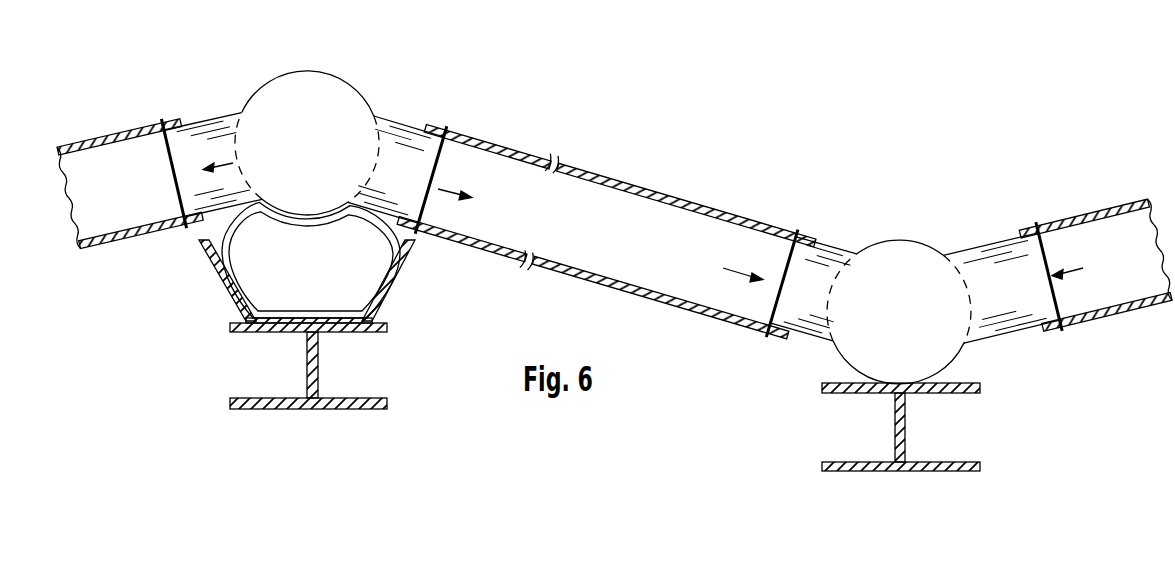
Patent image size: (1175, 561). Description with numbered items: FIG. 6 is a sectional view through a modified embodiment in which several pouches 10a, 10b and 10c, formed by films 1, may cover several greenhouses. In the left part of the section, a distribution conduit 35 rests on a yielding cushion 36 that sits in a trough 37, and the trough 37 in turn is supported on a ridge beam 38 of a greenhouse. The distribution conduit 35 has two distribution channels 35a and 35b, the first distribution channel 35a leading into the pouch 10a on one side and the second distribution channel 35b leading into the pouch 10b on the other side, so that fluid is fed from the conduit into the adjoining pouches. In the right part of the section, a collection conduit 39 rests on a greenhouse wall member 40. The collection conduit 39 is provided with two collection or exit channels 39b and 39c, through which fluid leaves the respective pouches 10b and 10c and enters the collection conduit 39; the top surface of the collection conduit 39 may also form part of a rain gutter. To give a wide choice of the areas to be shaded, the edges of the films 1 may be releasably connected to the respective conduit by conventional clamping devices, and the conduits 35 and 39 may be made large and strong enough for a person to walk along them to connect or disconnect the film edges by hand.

The film 1 is at (130, 245).
The pouch 10a is at (145, 245).
The pouch 10b is at (616, 162).
The pouch 10c is at (1076, 340).
The distribution conduit 35 is at (337, 72).
The distribution channel 35a is at (177, 168).
The distribution channel 35b is at (438, 168).
The yielding cushion 36 is at (237, 229).
The trough 37 is at (403, 250).
The ridge beam 38 is at (334, 404).
The collection conduit 39 is at (904, 242).
The collection channel 39b is at (784, 275).
The collection channel 39c is at (1049, 252).
The greenhouse wall member 40 is at (896, 466).